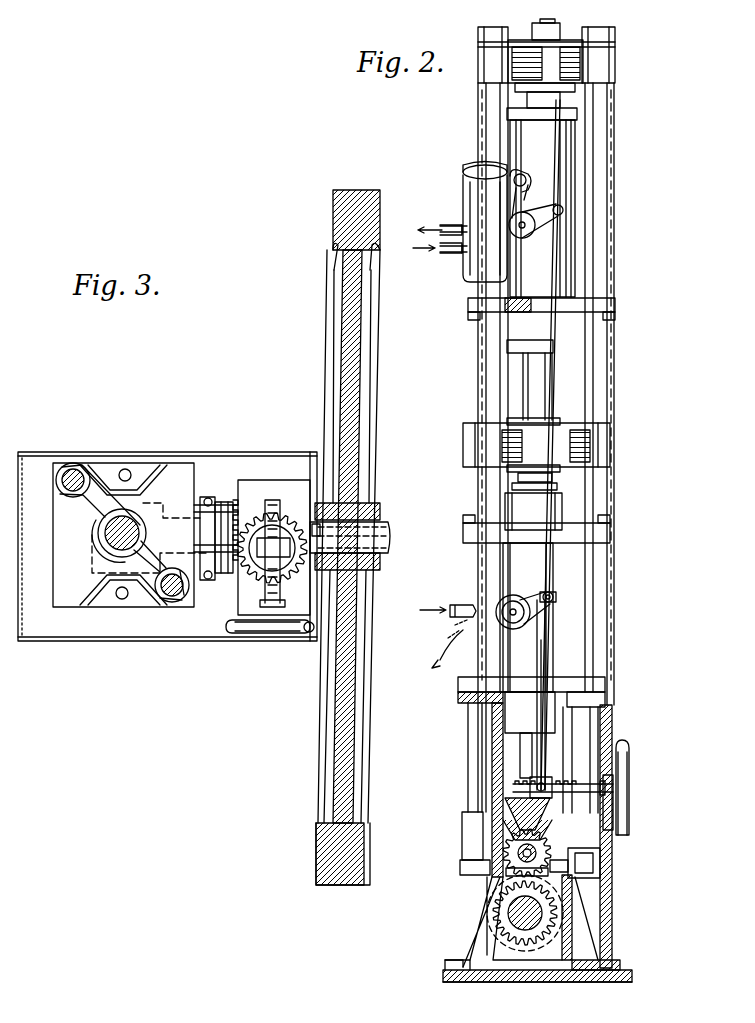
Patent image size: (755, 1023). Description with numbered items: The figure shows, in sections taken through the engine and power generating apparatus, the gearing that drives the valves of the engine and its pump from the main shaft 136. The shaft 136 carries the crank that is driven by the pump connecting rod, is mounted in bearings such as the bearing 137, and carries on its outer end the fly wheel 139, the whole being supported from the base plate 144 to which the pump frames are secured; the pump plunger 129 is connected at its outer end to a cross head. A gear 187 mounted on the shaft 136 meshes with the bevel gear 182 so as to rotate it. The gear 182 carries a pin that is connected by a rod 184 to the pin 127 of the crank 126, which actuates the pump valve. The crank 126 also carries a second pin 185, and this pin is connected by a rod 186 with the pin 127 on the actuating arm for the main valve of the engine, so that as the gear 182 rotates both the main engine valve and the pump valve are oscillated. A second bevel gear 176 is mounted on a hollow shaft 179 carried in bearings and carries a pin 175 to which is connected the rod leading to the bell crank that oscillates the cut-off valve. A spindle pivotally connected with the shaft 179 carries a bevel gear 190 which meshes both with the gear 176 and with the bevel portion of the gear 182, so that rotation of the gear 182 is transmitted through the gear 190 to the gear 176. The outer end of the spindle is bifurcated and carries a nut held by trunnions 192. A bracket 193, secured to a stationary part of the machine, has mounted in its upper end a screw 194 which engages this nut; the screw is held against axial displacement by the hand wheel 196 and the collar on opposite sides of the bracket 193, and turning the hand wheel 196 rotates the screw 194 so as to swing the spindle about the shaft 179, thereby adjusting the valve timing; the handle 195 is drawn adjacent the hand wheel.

In FIG. 2, the crank 126 is at (535, 596).
In FIG. 2, the pin 127 is at (553, 607).
In FIG. 3, the plunger 129 is at (253, 563).
In FIG. 2, the shaft 136 is at (540, 913).
In FIG. 3, the shaft 136 is at (373, 535).
In FIG. 2, the bearing 137 is at (502, 952).
In FIG. 3, the fly wheel 139 is at (362, 337).
In FIG. 2, the base plate 144 is at (593, 981).
In FIG. 3, the pin 175 is at (380, 508).
In FIG. 3, the bevel gear 176 is at (305, 500).
In FIG. 2, the hollow shaft 179 is at (503, 870).
In FIG. 2, the bevel gear 182 is at (565, 865).
In FIG. 3, the bevel gear 182 is at (237, 515).
In FIG. 2, the rod 184 is at (543, 660).
In FIG. 2, the second pin 185 is at (556, 598).
In FIG. 2, the rod 186 is at (557, 380).
In FIG. 2, the gear 187 is at (498, 905).
In FIG. 2, the bevel gear 190 is at (565, 832).
In FIG. 3, the bevel gear 190 is at (293, 633).
In FIG. 2, the trunnions 192 is at (517, 782).
In FIG. 2, the bracket 193 is at (563, 827).
In FIG. 2, the screw 194 is at (580, 786).
In FIG. 3, the screw 194 is at (267, 597).
In FIG. 2, the handle 195 is at (630, 762).
In FIG. 2, the hand wheel 196 is at (620, 806).
In FIG. 3, the hand wheel 196 is at (260, 627).